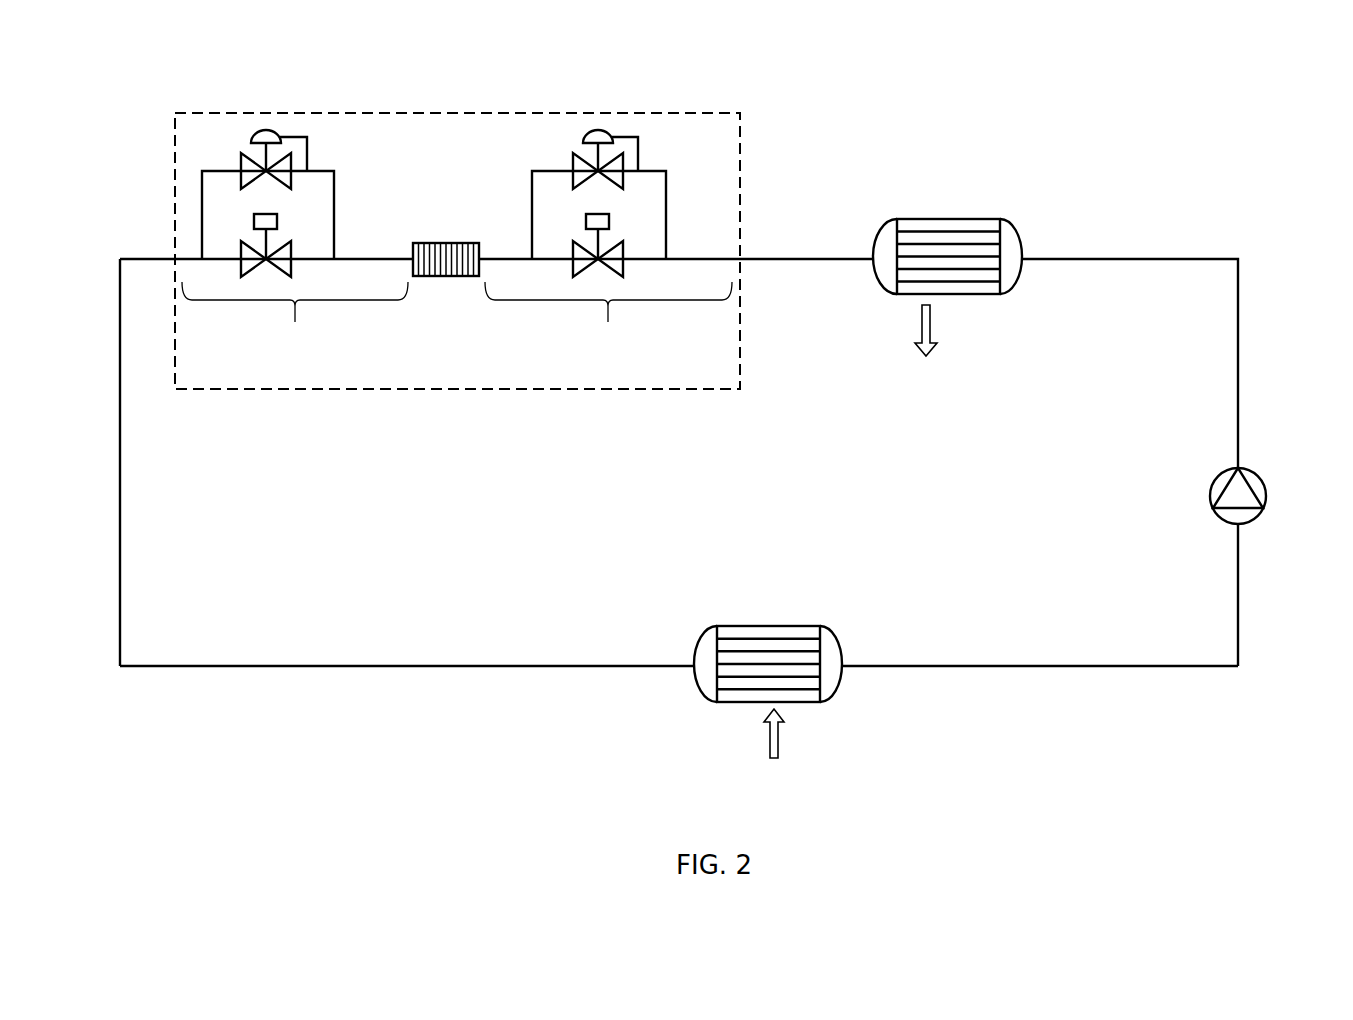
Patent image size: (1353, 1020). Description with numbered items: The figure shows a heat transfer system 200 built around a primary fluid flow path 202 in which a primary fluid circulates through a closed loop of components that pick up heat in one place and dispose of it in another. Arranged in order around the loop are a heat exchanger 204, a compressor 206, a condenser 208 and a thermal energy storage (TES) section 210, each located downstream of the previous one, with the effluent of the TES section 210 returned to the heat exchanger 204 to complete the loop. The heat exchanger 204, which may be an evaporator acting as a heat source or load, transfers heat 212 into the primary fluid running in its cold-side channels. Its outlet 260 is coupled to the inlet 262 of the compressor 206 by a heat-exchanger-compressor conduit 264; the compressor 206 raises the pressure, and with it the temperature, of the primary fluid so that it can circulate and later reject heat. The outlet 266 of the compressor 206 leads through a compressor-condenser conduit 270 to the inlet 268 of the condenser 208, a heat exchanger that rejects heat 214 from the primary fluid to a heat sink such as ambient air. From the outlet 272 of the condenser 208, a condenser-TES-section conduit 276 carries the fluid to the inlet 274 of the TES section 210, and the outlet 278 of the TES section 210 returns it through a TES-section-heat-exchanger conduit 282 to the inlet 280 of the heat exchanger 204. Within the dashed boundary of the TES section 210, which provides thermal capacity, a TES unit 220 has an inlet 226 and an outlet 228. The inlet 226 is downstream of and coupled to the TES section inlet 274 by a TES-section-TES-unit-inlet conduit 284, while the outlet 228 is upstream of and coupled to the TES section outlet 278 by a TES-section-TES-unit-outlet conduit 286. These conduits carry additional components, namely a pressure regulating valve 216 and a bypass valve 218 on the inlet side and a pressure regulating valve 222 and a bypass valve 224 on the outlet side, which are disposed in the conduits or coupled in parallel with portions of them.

The heat transfer system 200 is at (1212, 133).
The primary fluid flow path 202 is at (1258, 738).
The heat exchanger 204 is at (768, 623).
The compressor 206 is at (1267, 493).
The condenser 208 is at (947, 217).
The thermal energy storage (TES) section 210 is at (420, 390).
The heat 212 is at (792, 739).
The heat 214 is at (949, 337).
The pressure regulating valve 216 is at (572, 130).
The bypass valve 218 is at (637, 280).
The TES unit 220 is at (447, 243).
The pressure regulating valve 222 is at (225, 143).
The bypass valve 224 is at (225, 242).
The inlet 226 is at (488, 265).
The outlet 228 is at (403, 268).
The outlet 260 is at (845, 657).
The inlet 262 is at (1228, 533).
The heat-exchanger-compressor conduit 264 is at (1071, 670).
The outlet 266 is at (1233, 462).
The inlet 268 is at (1030, 265).
The compressor-condenser conduit 270 is at (1240, 270).
The outlet 272 is at (866, 270).
The inlet 274 is at (750, 265).
The condenser-TES-section conduit 276 is at (809, 258).
The outlet 278 is at (163, 268).
The inlet 280 is at (692, 660).
The TES-section-heat-exchanger conduit 282 is at (142, 670).
The TES-section-TES-unit-inlet conduit 284 is at (615, 246).
The TES-section-TES-unit-outlet conduit 286 is at (248, 226).